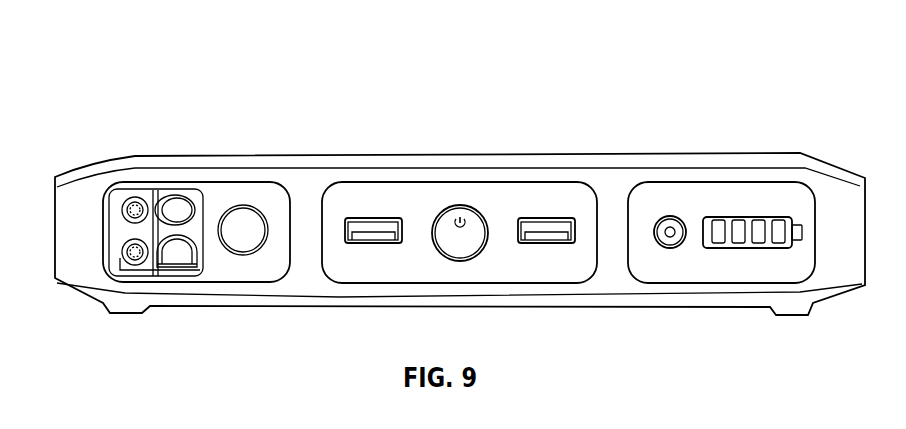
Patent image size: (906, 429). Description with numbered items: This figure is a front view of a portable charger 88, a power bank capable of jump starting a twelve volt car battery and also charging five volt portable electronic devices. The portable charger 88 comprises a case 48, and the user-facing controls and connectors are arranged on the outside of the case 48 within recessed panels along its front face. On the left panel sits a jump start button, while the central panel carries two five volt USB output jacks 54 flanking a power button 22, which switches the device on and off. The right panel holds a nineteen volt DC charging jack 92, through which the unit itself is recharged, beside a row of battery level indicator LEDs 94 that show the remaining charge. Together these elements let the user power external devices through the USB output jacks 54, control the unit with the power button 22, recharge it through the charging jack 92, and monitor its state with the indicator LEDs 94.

The portable charger 88 is at (238, 52).
The case 48 is at (80, 168).
The 5 V USB output jack 54 is at (372, 218).
The power button 22 is at (460, 205).
The 19 V DC charging jack 92 is at (670, 216).
The battery level indicator LEDs 94 is at (750, 217).